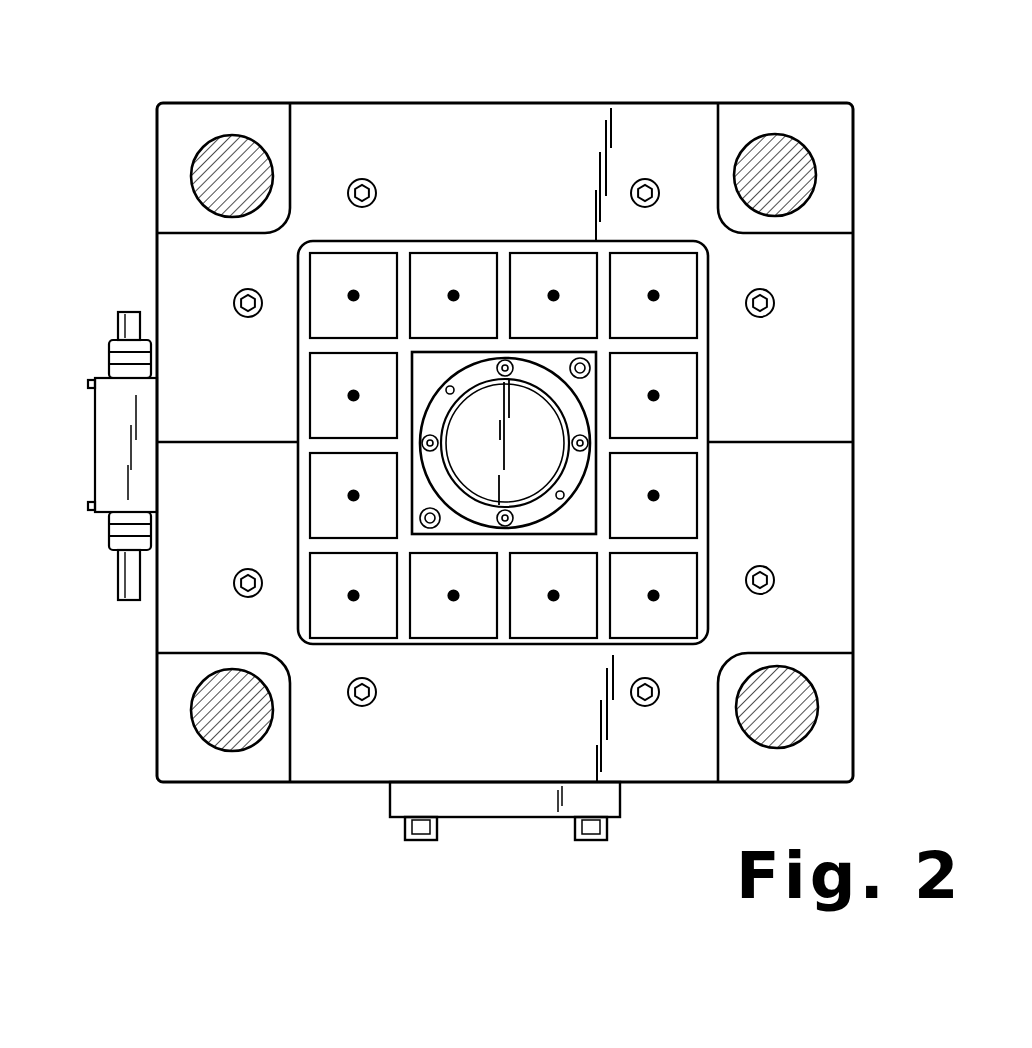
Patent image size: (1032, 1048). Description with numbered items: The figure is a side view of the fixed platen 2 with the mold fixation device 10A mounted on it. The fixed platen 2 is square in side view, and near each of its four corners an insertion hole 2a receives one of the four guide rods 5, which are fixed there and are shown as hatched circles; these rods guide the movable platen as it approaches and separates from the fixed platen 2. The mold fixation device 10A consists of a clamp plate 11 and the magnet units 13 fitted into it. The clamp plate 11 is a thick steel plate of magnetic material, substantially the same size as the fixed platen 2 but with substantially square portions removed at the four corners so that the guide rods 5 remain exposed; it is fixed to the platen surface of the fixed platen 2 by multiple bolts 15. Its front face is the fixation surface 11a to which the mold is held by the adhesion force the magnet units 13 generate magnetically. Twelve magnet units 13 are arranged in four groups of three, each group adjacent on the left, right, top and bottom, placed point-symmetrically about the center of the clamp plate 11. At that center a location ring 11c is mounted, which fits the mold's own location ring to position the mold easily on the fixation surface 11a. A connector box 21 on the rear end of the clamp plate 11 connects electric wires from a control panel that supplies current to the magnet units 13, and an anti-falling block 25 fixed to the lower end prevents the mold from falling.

The fixed platen 2 is at (758, 100).
The insertion holes 2a is at (806, 178).
The guide rods 5 is at (785, 706).
The mold fixation device 10A is at (461, 100).
The clamp plate 11 is at (288, 742).
The fixation surface 11a is at (575, 112).
The location ring 11c is at (578, 398).
The magnet units 13 is at (372, 240).
The bolts 15 is at (767, 289).
The connector boxes 21 is at (100, 436).
The anti-falling block 25 is at (500, 818).